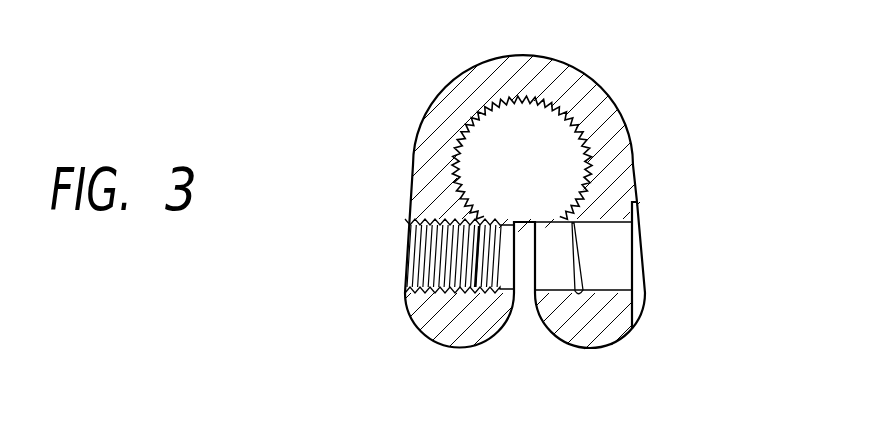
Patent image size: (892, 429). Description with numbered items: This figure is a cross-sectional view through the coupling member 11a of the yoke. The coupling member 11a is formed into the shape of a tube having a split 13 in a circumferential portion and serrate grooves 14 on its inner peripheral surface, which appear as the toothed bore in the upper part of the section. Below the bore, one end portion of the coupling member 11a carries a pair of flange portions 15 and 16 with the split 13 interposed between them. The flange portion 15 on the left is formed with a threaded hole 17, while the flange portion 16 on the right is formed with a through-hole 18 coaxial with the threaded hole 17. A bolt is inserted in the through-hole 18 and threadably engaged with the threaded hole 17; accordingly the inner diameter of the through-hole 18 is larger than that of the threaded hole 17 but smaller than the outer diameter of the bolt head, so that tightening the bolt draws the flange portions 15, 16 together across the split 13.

The coupling member 11a is at (633, 43).
The serrate grooves 14 is at (582, 143).
The threaded hole 17 is at (428, 282).
The flange portion 15 is at (414, 311).
The split 13 is at (524, 290).
The through-hole 18 is at (612, 289).
The flange portion 16 is at (616, 322).